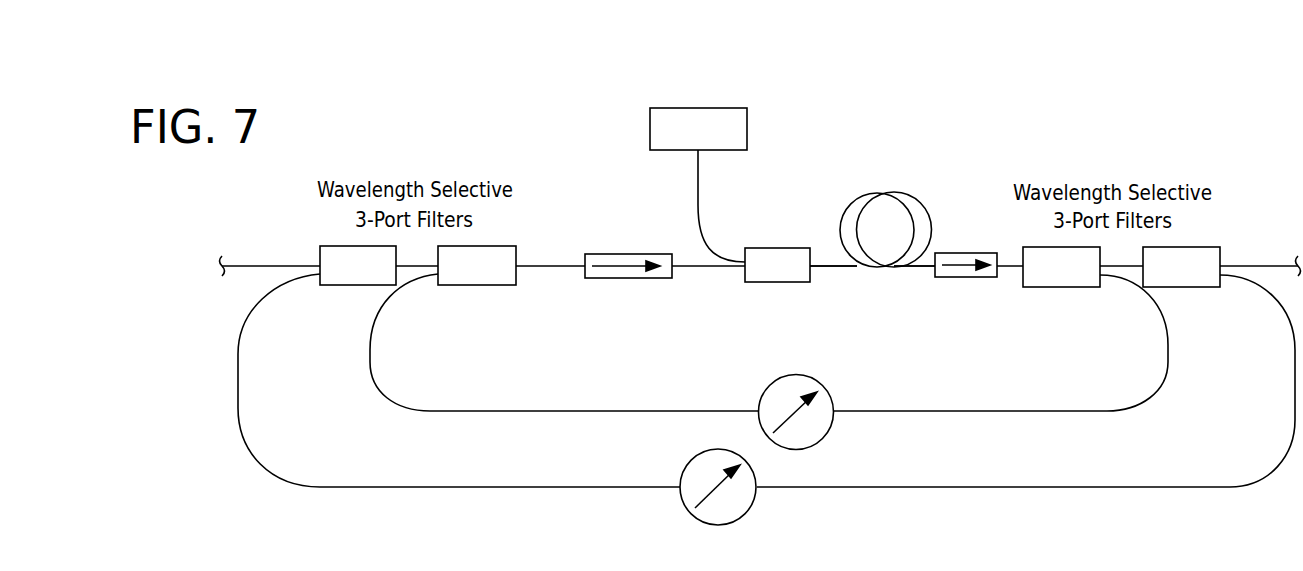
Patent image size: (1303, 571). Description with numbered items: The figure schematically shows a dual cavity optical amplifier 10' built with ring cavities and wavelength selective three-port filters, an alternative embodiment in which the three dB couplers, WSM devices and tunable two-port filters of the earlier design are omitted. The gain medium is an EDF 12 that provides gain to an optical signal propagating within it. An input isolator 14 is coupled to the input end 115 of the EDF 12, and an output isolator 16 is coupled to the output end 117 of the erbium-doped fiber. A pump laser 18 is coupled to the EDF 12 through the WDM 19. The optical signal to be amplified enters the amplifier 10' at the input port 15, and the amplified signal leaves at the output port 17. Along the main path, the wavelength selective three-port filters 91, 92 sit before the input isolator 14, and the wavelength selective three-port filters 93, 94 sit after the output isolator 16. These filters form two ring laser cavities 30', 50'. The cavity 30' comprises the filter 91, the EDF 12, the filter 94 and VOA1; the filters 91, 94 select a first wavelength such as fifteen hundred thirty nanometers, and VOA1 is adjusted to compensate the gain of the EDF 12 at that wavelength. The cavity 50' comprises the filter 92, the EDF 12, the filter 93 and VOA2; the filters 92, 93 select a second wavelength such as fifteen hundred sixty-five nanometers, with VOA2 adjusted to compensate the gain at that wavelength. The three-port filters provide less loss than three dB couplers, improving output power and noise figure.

The optical amplifier 10' is at (687, 414).
The input port 15 is at (248, 264).
The wavelength selective three-port filter 91 is at (333, 285).
The wavelength selective three-port filter 92 is at (475, 285).
The input isolator 14 is at (613, 254).
The pump laser 18 is at (710, 108).
The WDM 19 is at (743, 276).
The input end 115 is at (823, 260).
The EDF 12 is at (917, 197).
The output end 117 is at (920, 270).
The output isolator 16 is at (965, 253).
The wavelength selective three-port filter 93 is at (1060, 287).
The wavelength selective three-port filter 94 is at (1190, 287).
The output port 17 is at (1260, 267).
The ring laser cavity 50' is at (769, 368).
The ring laser cavity 30' is at (766, 400).